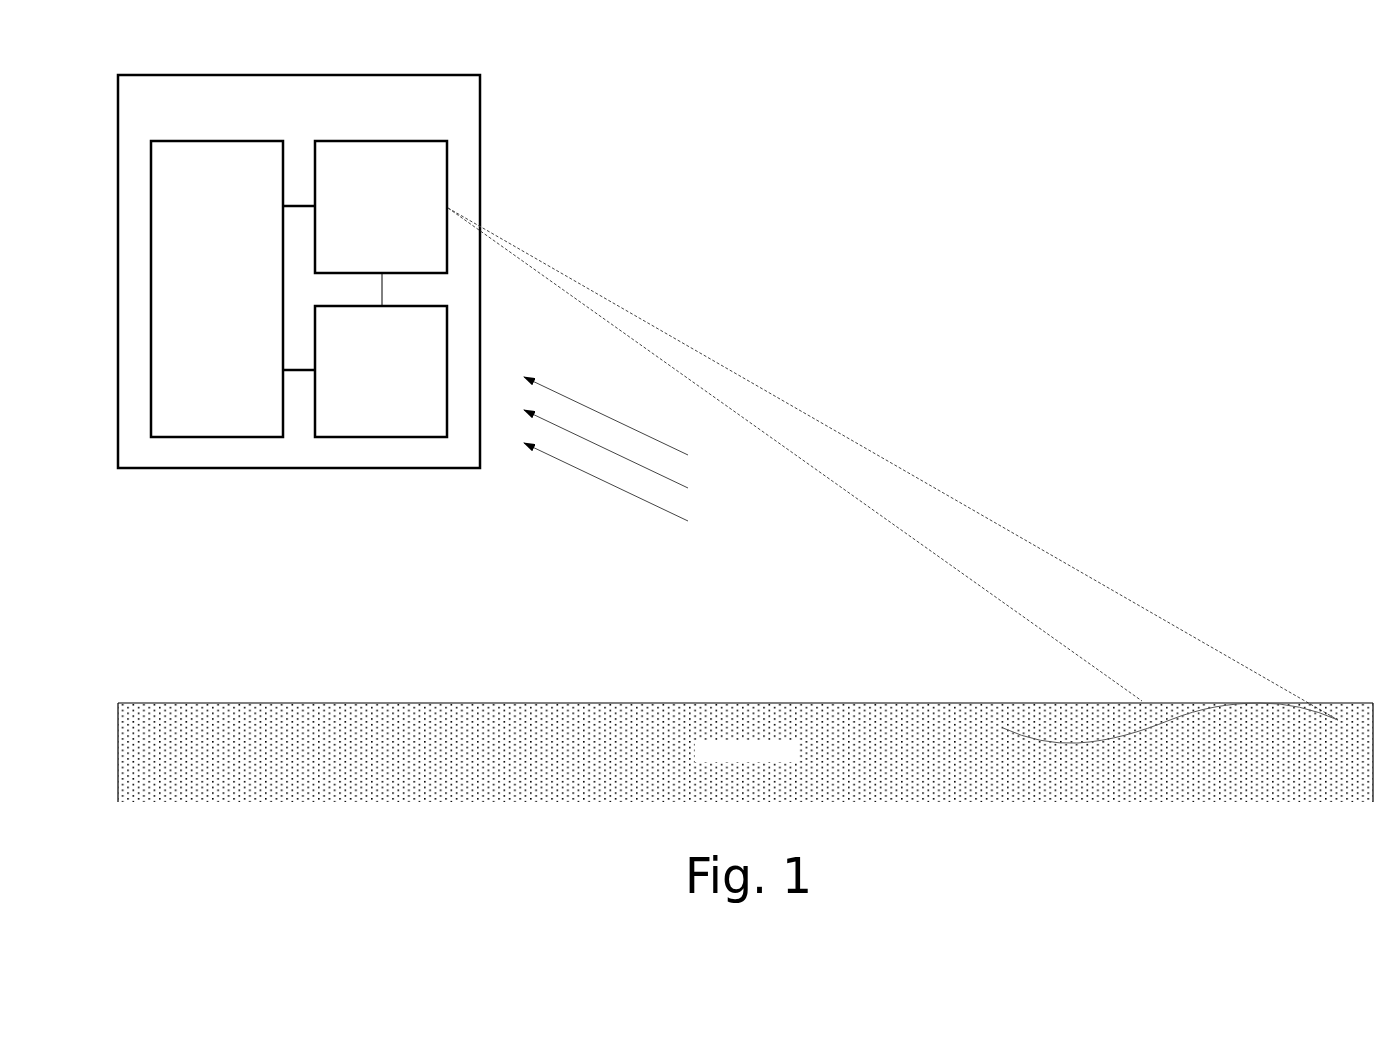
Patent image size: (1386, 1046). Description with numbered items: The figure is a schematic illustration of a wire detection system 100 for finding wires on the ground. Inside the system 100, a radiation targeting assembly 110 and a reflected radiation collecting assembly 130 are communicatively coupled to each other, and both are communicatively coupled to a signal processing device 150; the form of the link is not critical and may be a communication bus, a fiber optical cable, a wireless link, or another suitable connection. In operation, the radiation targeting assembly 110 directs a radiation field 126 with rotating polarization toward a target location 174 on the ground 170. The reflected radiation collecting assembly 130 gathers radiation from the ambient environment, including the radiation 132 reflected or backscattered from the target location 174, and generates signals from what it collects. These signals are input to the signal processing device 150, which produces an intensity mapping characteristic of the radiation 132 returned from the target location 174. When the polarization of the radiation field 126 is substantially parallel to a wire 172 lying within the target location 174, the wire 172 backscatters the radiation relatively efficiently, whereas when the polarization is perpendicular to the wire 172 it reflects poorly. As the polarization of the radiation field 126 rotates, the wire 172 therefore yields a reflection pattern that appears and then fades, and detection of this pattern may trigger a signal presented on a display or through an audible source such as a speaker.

The wire detection system 100 is at (299, 271).
The radiation targeting assembly 110 is at (381, 207).
The radiation field 126 is at (999, 544).
The reflected radiation collecting assembly 130 is at (381, 371).
The reflected radiation 132 is at (580, 500).
The signal processing device 150 is at (217, 289).
The ground 170 is at (745, 706).
The wire 172 is at (1057, 740).
The target location 174 is at (1187, 698).